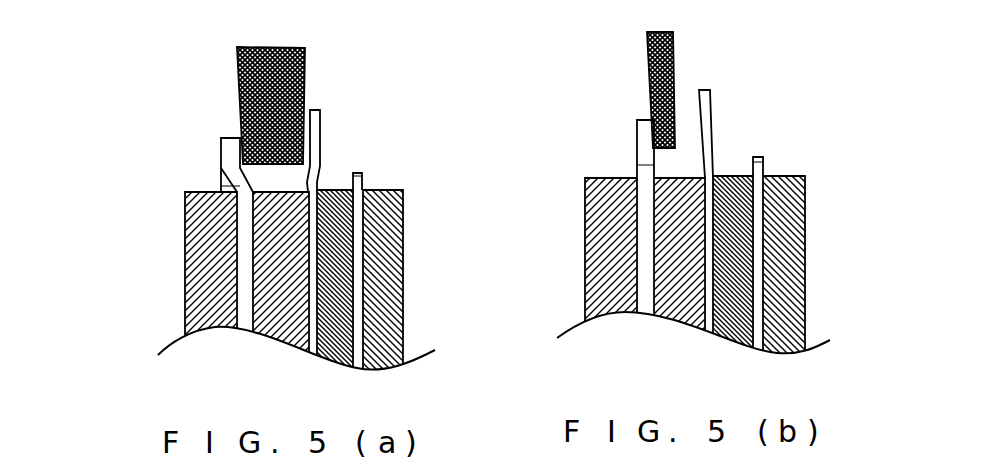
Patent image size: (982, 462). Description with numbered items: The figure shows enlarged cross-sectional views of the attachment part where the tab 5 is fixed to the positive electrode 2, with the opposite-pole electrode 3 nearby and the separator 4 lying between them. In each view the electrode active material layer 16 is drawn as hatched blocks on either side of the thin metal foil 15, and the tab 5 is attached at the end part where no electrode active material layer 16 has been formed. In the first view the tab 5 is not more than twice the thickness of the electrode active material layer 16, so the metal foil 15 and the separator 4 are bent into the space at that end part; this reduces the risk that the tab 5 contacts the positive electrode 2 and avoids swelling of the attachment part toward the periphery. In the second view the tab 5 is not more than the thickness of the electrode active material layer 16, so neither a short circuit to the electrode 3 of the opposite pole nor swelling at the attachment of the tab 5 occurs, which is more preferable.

In FIG. 5a, the positive electrode 2 is at (213, 150).
In FIG. 5b, the positive electrode 2 is at (624, 130).
In FIG. 5a, the electrode 3 is at (373, 157).
In FIG. 5b, the electrode 3 is at (767, 140).
In FIG. 5a, the separator 4 is at (313, 130).
In FIG. 5b, the separator 4 is at (705, 132).
In FIG. 5a, the tab 5 is at (306, 50).
In FIG. 5b, the tab 5 is at (674, 42).
In FIG. 5a, the metal foil 15 is at (230, 190).
In FIG. 5b, the metal foil 15 is at (637, 164).
In FIG. 5a, the electrode active material layer 16 is at (200, 285).
In FIG. 5b, the electrode active material layer 16 is at (597, 272).